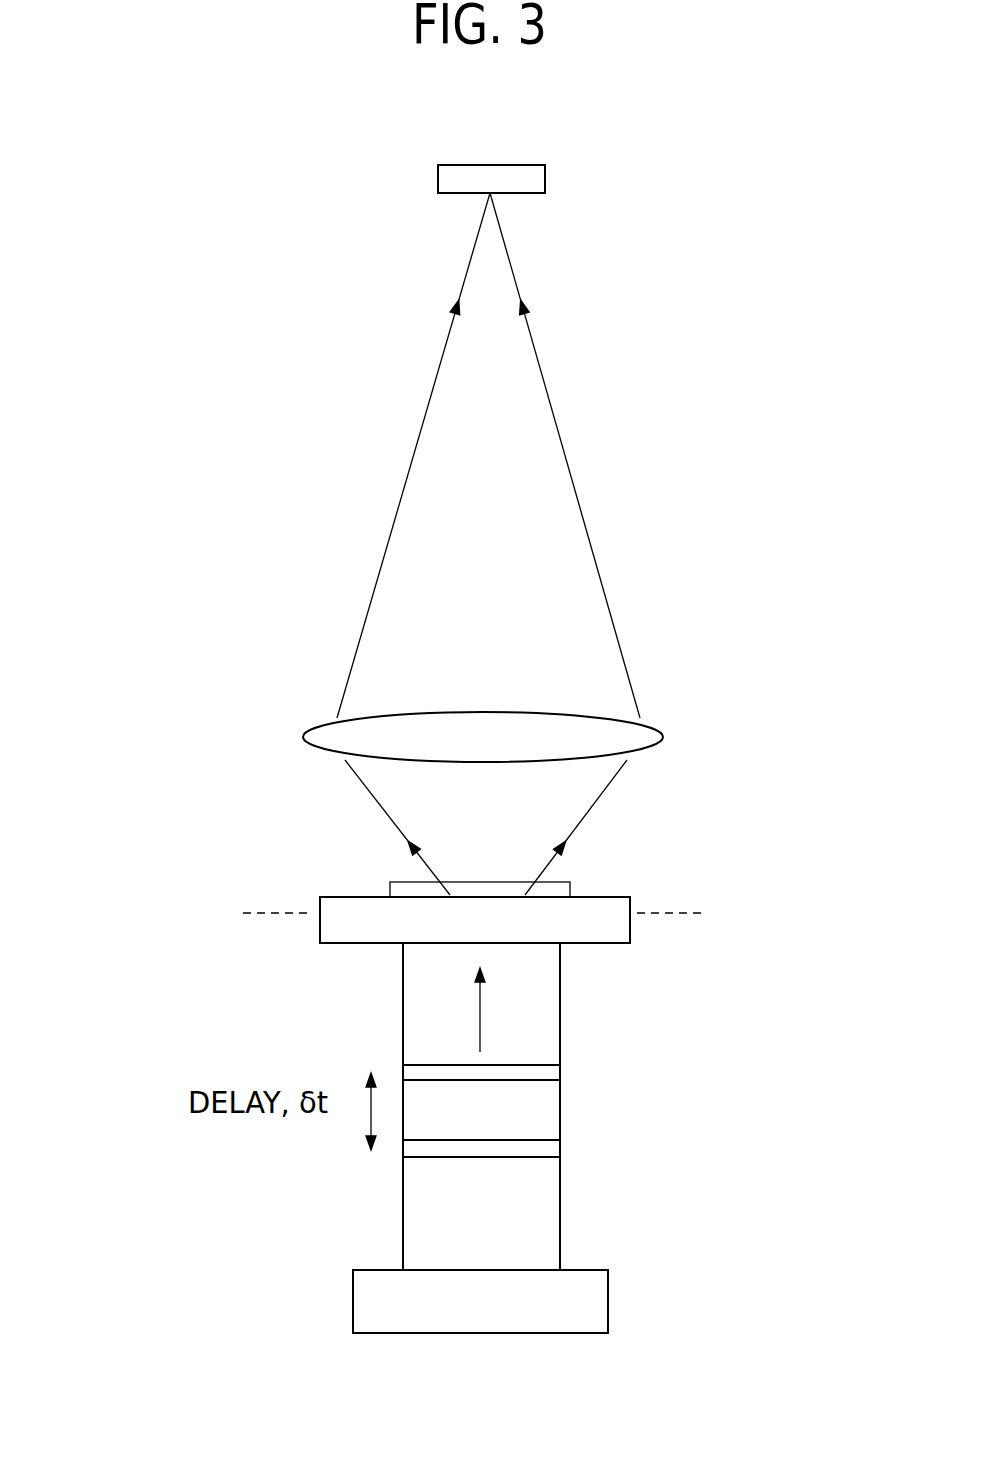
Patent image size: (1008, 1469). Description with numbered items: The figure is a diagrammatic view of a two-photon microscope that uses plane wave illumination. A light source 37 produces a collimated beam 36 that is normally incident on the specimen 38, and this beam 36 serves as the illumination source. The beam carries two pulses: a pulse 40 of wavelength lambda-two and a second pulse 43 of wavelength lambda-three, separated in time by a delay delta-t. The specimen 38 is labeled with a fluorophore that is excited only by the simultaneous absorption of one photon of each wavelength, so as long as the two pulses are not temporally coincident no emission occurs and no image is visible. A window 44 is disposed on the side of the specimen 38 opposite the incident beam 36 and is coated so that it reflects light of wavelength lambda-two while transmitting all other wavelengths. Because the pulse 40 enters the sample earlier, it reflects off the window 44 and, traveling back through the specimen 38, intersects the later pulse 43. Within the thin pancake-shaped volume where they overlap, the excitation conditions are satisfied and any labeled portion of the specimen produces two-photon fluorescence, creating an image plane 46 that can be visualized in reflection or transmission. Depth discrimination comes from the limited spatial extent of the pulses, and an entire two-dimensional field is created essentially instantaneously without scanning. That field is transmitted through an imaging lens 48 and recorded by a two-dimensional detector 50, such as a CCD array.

The collimated beam 36 is at (413, 1212).
The light source 37 is at (608, 1290).
The specimen 38 is at (630, 925).
The pulse 40 is at (560, 1072).
The pulse of wavelength lambda 3 43 is at (560, 1148).
The window 44 is at (385, 890).
The image plane 46 is at (673, 912).
The imaging lens 48 is at (653, 723).
The two-dimensional detector 50 is at (545, 175).